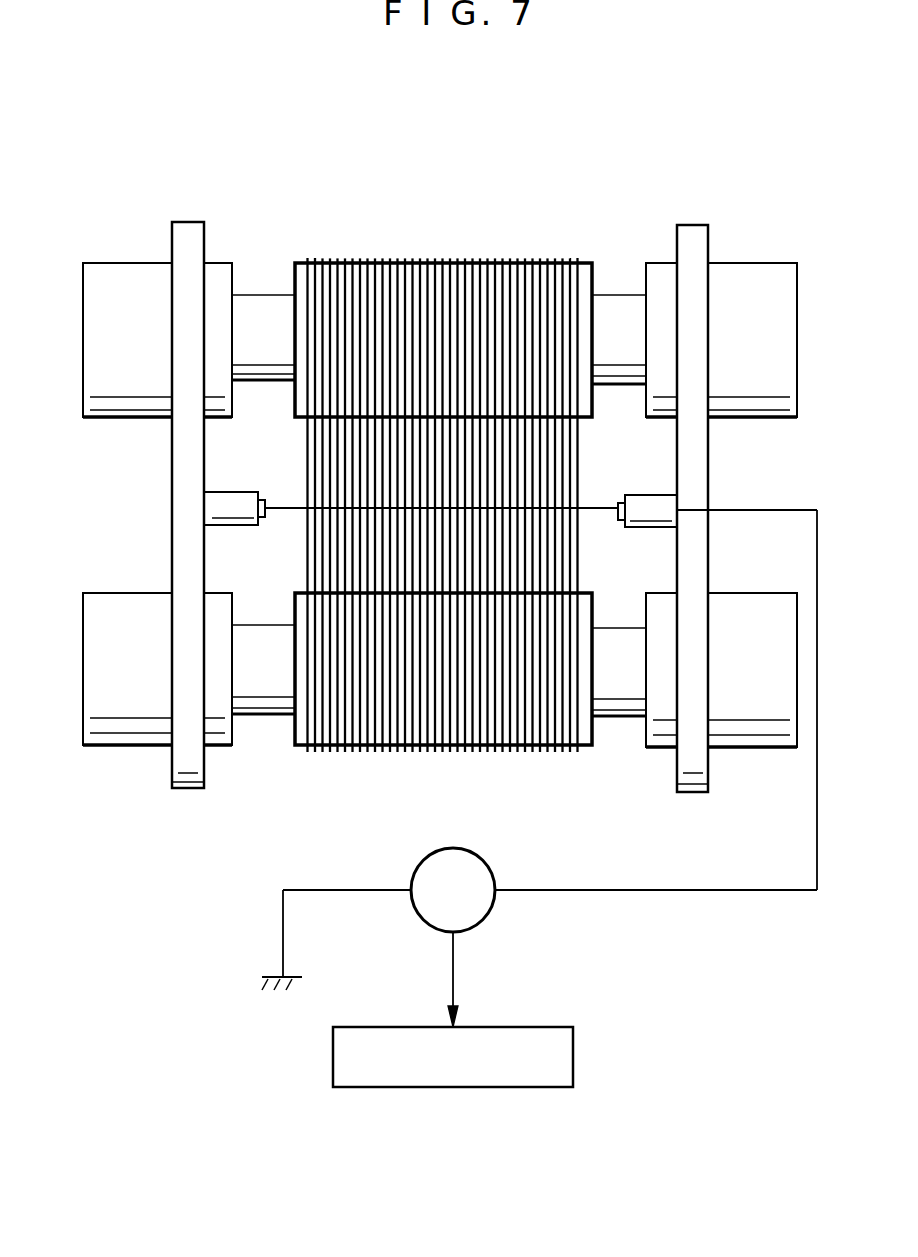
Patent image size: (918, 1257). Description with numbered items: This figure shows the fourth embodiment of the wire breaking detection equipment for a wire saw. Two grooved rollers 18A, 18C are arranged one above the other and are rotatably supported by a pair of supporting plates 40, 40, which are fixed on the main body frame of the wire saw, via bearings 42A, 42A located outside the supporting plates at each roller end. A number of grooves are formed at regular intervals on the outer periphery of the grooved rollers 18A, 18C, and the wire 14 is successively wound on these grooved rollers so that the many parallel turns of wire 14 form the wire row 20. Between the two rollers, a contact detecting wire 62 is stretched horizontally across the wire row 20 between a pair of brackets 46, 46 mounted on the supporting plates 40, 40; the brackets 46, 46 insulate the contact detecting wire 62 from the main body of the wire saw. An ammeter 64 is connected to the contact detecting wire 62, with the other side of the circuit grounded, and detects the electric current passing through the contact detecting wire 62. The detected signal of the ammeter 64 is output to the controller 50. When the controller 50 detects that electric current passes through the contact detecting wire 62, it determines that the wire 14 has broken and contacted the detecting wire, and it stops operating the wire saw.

The wire 14 is at (580, 458).
The grooved roller 18A is at (585, 266).
The grooved roller 18C is at (298, 738).
The wire row 20 is at (376, 246).
The supporting plate 40 is at (190, 232).
The bearing 42A is at (128, 268).
The bracket 46 is at (240, 500).
The controller 50 is at (527, 1027).
The contact detecting wire 62 is at (560, 533).
The ammeter 64 is at (490, 862).